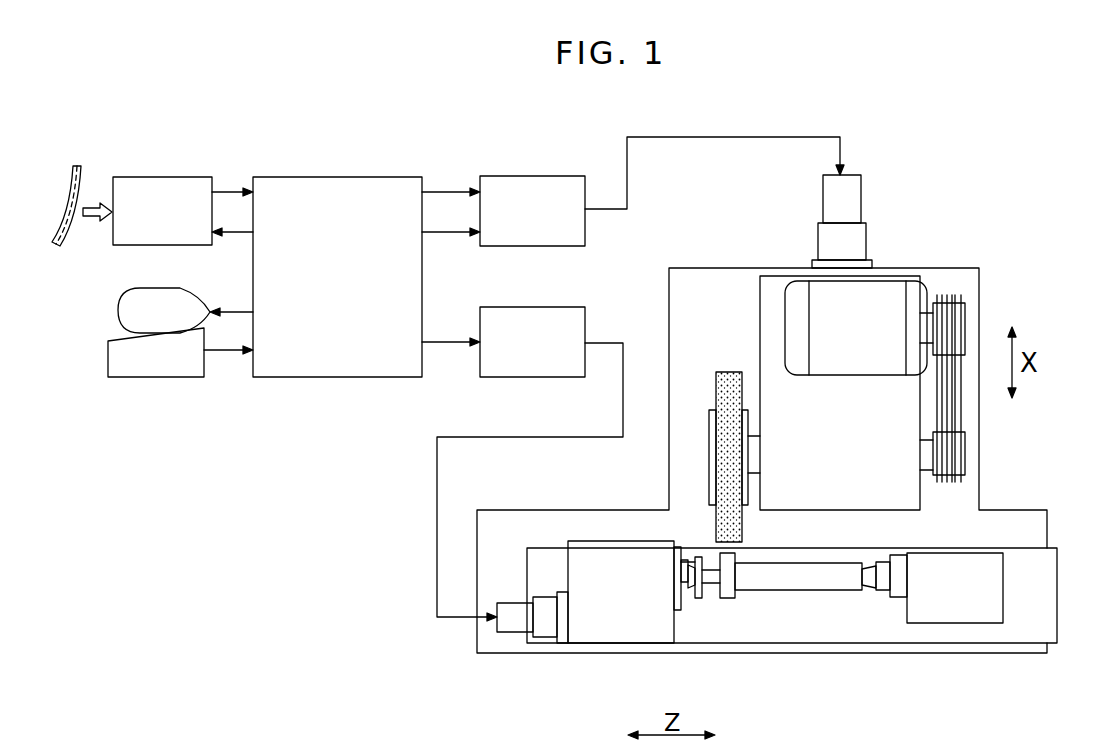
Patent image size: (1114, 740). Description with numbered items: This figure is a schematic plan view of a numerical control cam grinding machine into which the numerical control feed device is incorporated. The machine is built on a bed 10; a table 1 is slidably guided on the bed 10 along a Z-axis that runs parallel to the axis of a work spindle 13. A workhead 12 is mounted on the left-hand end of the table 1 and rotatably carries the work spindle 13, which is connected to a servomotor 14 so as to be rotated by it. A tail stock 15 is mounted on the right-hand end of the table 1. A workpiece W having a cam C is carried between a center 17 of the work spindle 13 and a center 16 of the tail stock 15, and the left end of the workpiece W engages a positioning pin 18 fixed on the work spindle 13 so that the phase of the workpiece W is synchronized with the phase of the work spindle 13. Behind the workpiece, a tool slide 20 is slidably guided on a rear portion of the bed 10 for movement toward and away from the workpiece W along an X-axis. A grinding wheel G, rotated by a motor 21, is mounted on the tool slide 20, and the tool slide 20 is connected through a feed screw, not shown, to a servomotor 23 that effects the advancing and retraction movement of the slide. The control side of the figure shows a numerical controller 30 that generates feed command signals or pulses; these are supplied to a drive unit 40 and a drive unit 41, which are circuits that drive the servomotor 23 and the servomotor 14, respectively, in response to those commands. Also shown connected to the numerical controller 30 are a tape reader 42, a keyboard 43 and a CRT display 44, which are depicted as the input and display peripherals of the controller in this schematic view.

The table 1 is at (1057, 620).
The bed 10 is at (1047, 533).
The workhead 12 is at (612, 637).
The work spindle 13 is at (688, 610).
The servomotor 14 is at (512, 626).
The tail stock 15 is at (958, 612).
The center 16 is at (866, 584).
The center 17 is at (690, 580).
The positioning pin 18 is at (690, 558).
The tool slide 20 is at (916, 496).
The motor 21 is at (893, 285).
The servomotor 23 is at (860, 200).
The numerical controller 30 is at (258, 177).
The drive unit 40 is at (490, 176).
The drive unit 41 is at (490, 307).
The tape reader 42 is at (125, 177).
The keyboard 43 is at (120, 377).
The CRT display 44 is at (118, 295).
The grinding wheel G is at (716, 380).
The workpiece W is at (788, 596).
The cam C is at (732, 598).